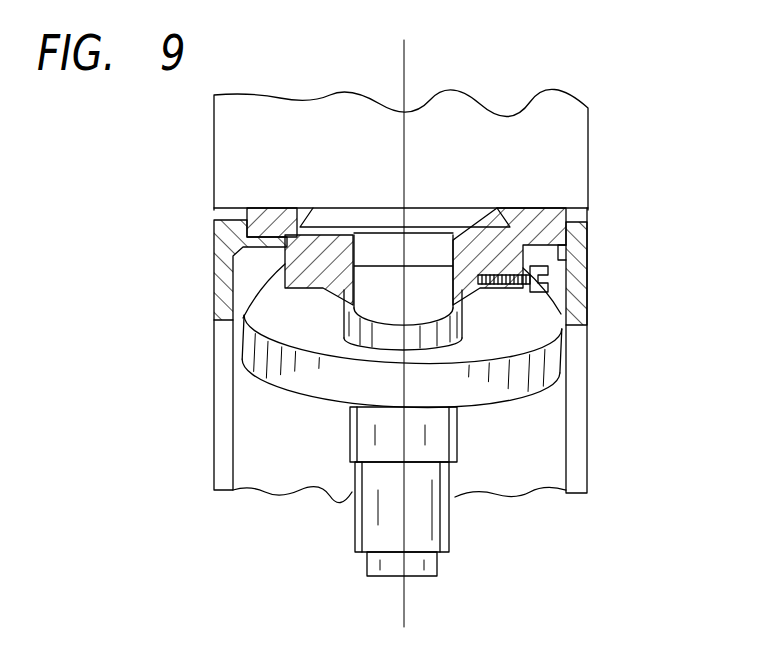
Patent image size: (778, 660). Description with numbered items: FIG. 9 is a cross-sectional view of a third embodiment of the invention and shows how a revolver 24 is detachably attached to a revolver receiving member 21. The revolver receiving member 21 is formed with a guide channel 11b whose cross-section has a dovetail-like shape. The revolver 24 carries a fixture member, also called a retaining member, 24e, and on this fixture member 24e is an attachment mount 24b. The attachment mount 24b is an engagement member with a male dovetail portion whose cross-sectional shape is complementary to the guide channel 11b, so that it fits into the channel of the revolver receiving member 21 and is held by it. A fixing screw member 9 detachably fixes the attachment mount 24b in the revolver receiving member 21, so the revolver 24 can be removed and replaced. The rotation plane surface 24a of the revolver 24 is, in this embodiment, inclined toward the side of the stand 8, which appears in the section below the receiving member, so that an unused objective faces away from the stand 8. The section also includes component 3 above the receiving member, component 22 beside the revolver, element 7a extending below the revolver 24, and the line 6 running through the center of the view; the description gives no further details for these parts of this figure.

The upper housing block 3 is at (477, 113).
The axis of rotation 6 is at (405, 610).
The shaft 7a is at (445, 525).
The stand 8 is at (277, 480).
The fixing screw member 9 is at (550, 279).
The guide channel 11b is at (328, 288).
The revolver receiving member 21 is at (535, 207).
The housing wall 22 is at (214, 246).
The revolver 24 is at (245, 347).
The rotation plane surface 24a is at (525, 328).
The attachment mount 24b is at (455, 242).
The fixture member 24e is at (432, 350).